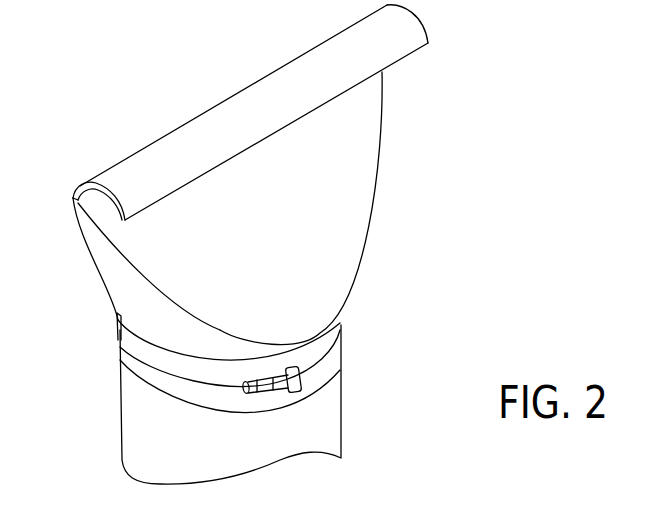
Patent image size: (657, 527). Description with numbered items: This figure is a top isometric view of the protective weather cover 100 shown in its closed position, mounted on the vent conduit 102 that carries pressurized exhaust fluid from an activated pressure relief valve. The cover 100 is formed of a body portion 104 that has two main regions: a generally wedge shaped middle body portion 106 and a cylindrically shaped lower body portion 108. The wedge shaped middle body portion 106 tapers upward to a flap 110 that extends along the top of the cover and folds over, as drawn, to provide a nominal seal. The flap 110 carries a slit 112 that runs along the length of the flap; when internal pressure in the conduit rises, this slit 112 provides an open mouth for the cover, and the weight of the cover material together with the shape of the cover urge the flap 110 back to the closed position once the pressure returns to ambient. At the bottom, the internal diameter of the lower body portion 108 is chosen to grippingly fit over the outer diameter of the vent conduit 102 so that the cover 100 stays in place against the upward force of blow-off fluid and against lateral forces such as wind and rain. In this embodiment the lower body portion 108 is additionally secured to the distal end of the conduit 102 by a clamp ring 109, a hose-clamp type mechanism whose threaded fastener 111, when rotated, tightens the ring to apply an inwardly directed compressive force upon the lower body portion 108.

The cover 100 is at (175, 118).
The conduit 102 is at (135, 442).
The body portion 104 is at (118, 284).
The middle body portion 106 is at (332, 242).
The lower body portion 108 is at (322, 337).
The clamp ring 109 is at (163, 378).
The flap 110 is at (400, 35).
The threaded fastener 111 is at (297, 393).
The slit 112 is at (263, 140).